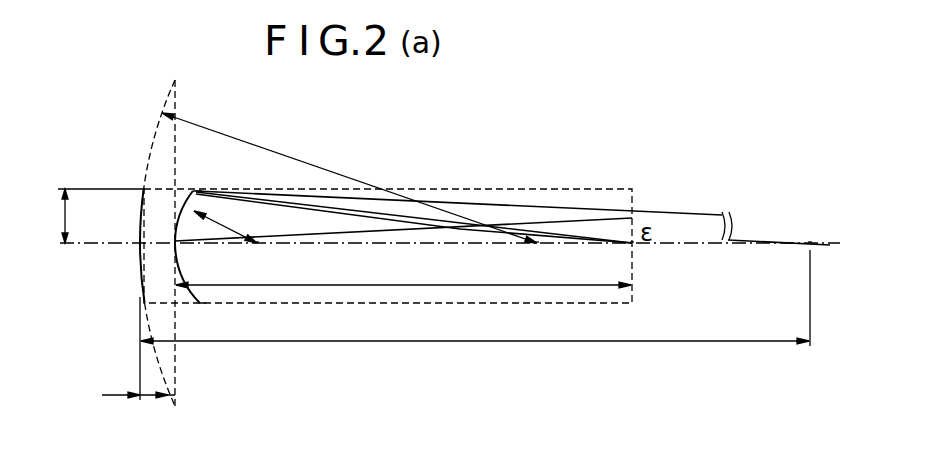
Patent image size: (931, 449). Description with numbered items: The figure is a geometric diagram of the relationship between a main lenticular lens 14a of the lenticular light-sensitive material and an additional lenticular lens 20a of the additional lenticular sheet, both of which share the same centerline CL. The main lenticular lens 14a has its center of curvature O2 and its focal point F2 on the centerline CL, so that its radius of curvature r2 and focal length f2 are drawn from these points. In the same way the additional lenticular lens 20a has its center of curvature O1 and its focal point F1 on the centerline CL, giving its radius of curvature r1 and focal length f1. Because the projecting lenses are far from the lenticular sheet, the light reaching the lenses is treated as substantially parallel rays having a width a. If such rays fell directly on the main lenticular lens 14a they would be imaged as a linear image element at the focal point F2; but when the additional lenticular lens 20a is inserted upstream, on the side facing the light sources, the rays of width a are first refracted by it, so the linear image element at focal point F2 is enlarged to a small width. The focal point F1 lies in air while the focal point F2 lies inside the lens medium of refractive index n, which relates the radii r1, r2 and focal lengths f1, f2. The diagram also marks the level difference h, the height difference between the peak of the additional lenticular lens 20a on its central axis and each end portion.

The additional lenticular lens 20a is at (150, 271).
The main lenticular lens 14a is at (225, 268).
The radius of curvature of the additional lenticular lens r1 is at (349, 178).
The radius of curvature of the main lenticular lens r2 is at (225, 219).
The width of parallel rays a is at (93, 216).
The level difference h is at (138, 412).
The focal length of the additional lenticular lens f1 is at (475, 325).
The focal length of the main lenticular lens f2 is at (403, 271).
The center of curvature of the additional lenticular lens O1 is at (544, 264).
The center of curvature of the main lenticular lens O2 is at (267, 263).
The focal point of the additional lenticular lens F1 is at (814, 263).
The focal point of the main lenticular lens F2 is at (646, 263).
The centerline CL is at (673, 247).